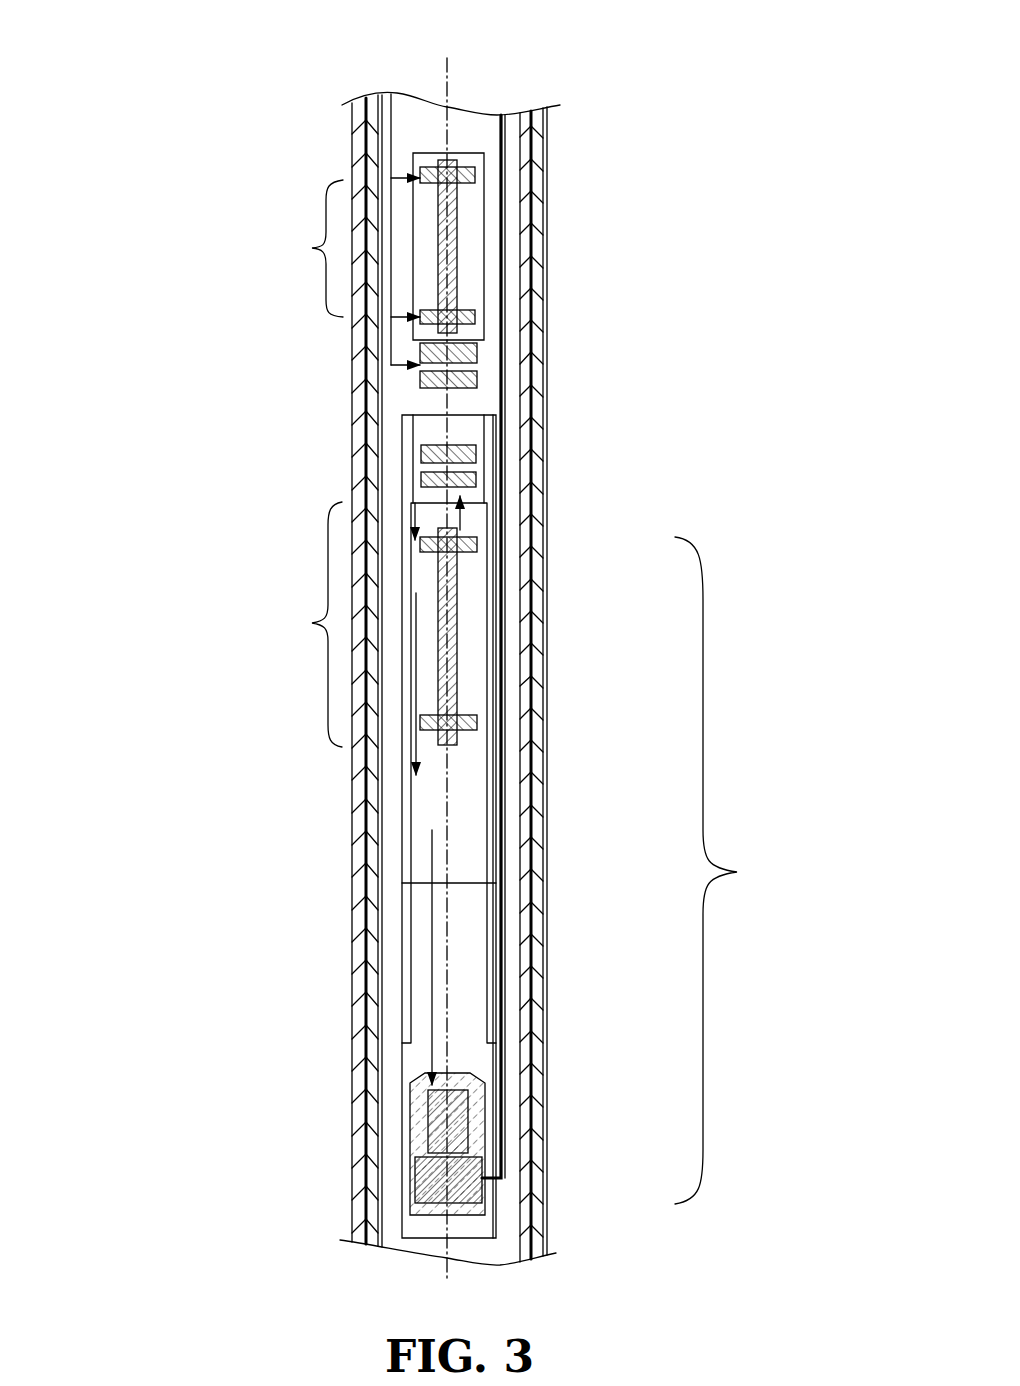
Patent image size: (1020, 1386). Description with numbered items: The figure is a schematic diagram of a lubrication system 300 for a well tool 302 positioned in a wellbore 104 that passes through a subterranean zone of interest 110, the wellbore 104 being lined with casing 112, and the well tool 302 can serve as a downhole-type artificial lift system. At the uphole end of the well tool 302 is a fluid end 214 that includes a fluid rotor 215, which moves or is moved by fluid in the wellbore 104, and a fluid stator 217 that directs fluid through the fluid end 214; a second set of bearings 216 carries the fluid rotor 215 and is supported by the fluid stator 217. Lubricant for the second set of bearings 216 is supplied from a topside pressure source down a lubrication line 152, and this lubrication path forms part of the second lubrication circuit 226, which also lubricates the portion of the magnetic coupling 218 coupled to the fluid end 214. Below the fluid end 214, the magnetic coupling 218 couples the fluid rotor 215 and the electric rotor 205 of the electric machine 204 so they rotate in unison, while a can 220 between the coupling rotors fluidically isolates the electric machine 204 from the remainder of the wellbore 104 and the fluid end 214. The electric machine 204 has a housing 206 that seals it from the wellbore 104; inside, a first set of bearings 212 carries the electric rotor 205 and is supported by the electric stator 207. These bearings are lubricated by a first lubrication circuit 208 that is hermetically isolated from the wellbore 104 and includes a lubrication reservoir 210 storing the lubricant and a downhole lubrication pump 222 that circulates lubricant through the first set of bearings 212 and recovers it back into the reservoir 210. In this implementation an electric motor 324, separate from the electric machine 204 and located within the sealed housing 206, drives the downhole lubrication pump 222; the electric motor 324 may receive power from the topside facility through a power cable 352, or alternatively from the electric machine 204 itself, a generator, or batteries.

The lubrication system 300 is at (136, 84).
The lubrication line 152 is at (393, 142).
The second lubrication circuit 226 is at (393, 142).
The subterranean zone of interest 110 is at (357, 820).
The casing 112 is at (372, 885).
The wellbore 104 is at (482, 128).
The power cable 352 is at (502, 235).
The fluid rotor 215 is at (460, 293).
The fluid stator 217 is at (470, 203).
The fluid end 214 is at (323, 208).
The second set of bearings 216 is at (299, 248).
The magnetic coupling 218 is at (368, 373).
The can 220 is at (402, 410).
The lubrication reservoir 210 is at (488, 1118).
The housing 206 is at (501, 686).
The electric rotor 205 is at (455, 575).
The electric stator 207 is at (468, 655).
The electric machine 204 is at (531, 595).
The well tool 302 is at (548, 512).
The first set of bearings 212 is at (299, 624).
The first lubrication circuit 208 is at (740, 870).
The downhole lubrication pump 222 is at (420, 1108).
The electric motor 324 is at (418, 1195).